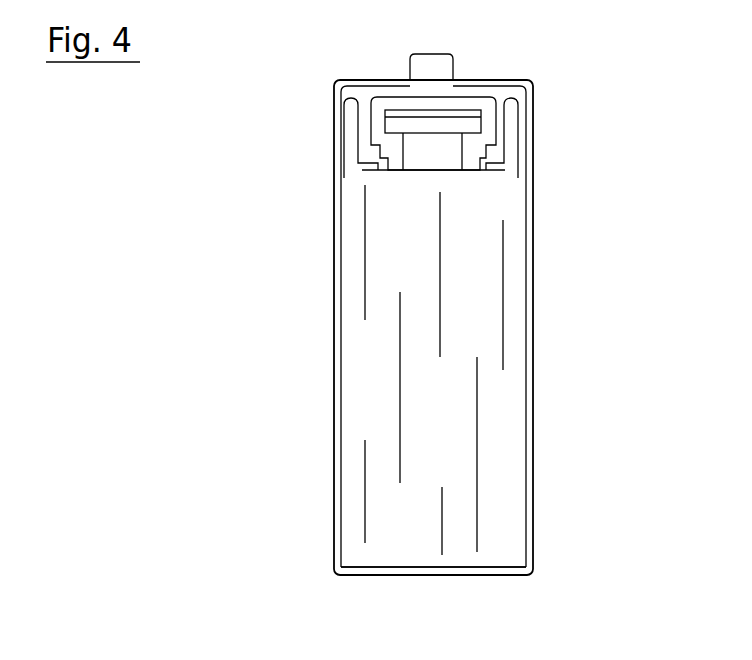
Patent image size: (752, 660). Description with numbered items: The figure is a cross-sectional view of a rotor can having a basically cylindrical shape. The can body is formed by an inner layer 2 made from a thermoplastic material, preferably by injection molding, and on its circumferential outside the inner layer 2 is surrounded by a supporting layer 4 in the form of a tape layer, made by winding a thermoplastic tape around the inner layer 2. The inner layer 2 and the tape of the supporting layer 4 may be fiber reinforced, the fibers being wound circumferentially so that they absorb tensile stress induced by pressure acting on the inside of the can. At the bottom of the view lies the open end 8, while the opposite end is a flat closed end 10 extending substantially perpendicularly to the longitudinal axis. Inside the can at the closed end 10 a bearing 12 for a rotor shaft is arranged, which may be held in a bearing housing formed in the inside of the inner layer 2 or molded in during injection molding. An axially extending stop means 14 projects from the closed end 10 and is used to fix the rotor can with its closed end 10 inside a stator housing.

The inner layer 2 is at (537, 412).
The supporting layer 4 is at (533, 153).
The open end 8 is at (457, 575).
The closed end 10 is at (513, 78).
The bearing 12 is at (473, 170).
The stop means 14 is at (447, 53).